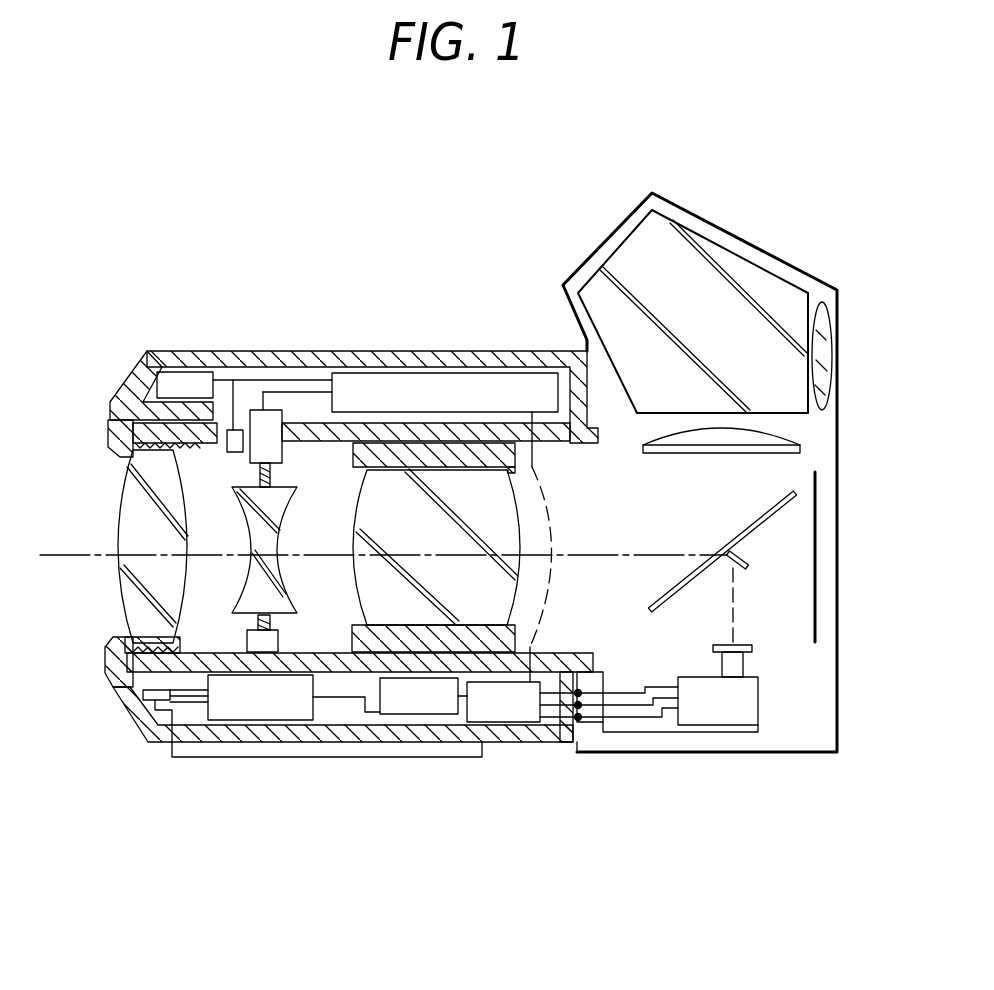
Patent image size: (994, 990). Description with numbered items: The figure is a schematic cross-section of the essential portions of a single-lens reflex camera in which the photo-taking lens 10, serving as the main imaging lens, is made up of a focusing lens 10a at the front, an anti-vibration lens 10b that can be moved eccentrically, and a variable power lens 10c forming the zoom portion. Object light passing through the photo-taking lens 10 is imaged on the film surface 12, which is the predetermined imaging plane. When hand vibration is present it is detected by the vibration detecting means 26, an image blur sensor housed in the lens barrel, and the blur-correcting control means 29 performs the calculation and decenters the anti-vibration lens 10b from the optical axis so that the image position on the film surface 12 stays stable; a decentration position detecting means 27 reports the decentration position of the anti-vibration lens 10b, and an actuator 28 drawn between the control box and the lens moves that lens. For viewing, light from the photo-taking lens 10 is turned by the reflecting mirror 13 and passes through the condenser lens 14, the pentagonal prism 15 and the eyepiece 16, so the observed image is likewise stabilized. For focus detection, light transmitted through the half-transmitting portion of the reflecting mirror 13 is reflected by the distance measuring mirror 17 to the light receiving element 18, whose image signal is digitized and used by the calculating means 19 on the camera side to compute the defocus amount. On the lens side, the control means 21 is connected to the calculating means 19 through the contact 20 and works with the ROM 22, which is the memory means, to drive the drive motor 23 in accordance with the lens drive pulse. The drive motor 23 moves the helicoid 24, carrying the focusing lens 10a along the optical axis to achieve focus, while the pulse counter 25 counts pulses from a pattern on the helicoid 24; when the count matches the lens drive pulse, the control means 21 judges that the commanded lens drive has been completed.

The photo-taking lens 10 is at (247, 552).
The focusing lens 10a is at (123, 482).
The anti-vibration lens 10b is at (245, 517).
The variable power lens 10c is at (548, 523).
The film surface 12 is at (816, 502).
The reflecting mirror 13 is at (762, 513).
The condenser lens 14 is at (797, 437).
The pentagonal prism 15 is at (733, 250).
The eyepiece 16 is at (832, 317).
The distance measuring mirror 17 is at (749, 557).
The light receiving element 18 is at (743, 645).
The calculating means 19 is at (757, 707).
The contact 20 is at (580, 722).
The control means 21 is at (508, 722).
The ROM 22 is at (405, 714).
The drive motor 23 is at (263, 722).
The helicoid 24 is at (107, 672).
The pulse counter 25 is at (130, 700).
The vibration detecting means 26 is at (160, 351).
The decentration position detecting means 27 is at (232, 380).
The blur-correcting actuator 28 is at (263, 392).
The blur-correcting control means 29 is at (378, 373).